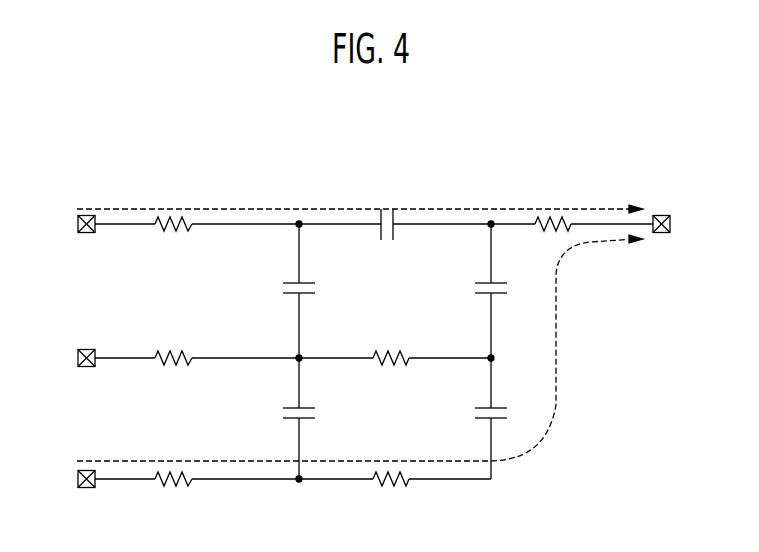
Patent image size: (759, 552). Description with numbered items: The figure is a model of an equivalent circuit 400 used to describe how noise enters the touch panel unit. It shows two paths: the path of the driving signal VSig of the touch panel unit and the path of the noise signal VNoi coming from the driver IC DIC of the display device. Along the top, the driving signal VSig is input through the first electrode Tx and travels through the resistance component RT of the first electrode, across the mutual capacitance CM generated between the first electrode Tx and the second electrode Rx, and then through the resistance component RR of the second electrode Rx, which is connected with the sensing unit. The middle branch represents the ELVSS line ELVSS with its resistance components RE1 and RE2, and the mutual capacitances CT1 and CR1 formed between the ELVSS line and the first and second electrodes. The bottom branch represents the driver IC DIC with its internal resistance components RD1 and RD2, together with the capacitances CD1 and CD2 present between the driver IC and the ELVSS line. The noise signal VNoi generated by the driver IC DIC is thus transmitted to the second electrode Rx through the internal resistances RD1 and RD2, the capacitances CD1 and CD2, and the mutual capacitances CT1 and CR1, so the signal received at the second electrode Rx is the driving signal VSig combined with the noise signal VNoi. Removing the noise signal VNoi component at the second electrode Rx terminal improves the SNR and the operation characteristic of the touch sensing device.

The equivalent circuit 400 is at (466, 156).
The first electrode Tx is at (74, 225).
The second electrode Rx is at (672, 225).
The ELVSS line ELVSS is at (61, 360).
The driver IC DIC is at (71, 481).
The resistance component of the first electrode RT is at (173, 239).
The resistance component of the second electrode RR is at (553, 239).
The mutual capacitance CM is at (385, 239).
The mutual capacitance between ELVSS line and first electrode CT1 is at (286, 291).
The mutual capacitance between ELVSS line and second electrode CR1 is at (477, 291).
The capacitance between driver IC and ELVSS line CD1 is at (286, 413).
The capacitance between driver IC and ELVSS line CD2 is at (477, 413).
The resistance component of the ELVSS line RE1 is at (173, 344).
The resistance component of the ELVSS line RE2 is at (391, 343).
The internal resistance component of the driver IC RD1 is at (173, 494).
The internal resistance component of the driver IC RD2 is at (391, 494).
The driving signal VSig is at (360, 199).
The noise signal VNoi is at (360, 348).